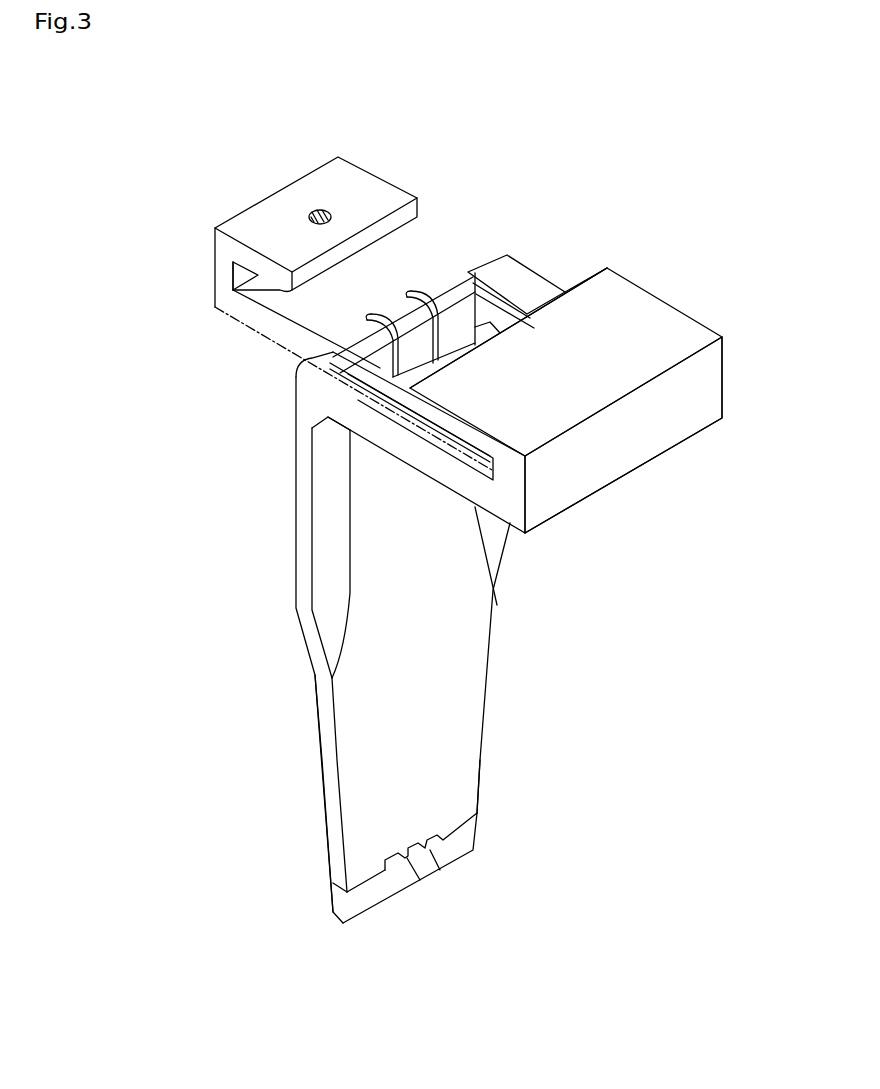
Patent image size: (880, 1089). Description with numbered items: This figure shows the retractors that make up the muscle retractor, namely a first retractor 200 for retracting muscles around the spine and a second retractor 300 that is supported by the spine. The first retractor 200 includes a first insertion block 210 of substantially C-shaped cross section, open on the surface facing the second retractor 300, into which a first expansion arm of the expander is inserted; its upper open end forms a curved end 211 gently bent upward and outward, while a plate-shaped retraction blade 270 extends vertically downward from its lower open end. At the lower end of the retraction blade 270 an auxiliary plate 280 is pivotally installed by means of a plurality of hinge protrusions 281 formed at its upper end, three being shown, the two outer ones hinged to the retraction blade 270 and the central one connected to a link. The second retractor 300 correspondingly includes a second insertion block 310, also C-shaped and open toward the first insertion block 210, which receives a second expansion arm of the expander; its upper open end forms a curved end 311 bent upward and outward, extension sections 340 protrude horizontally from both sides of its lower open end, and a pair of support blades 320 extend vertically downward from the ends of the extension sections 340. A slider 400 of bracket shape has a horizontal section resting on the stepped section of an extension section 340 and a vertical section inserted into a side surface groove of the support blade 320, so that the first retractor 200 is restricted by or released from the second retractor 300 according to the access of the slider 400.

The first retractor 200 is at (276, 185).
The first insertion block 210 is at (215, 286).
The curved end 211 is at (410, 207).
The retraction blade 270 is at (322, 770).
The auxiliary plate 280 is at (340, 916).
The hinge protrusions 281 is at (432, 850).
The second retractor 300 is at (676, 298).
The second insertion block 310 is at (710, 380).
The curved end 311 is at (605, 268).
The support blades 320 is at (300, 570).
The extension sections 340 is at (522, 268).
The slider 400 is at (360, 379).